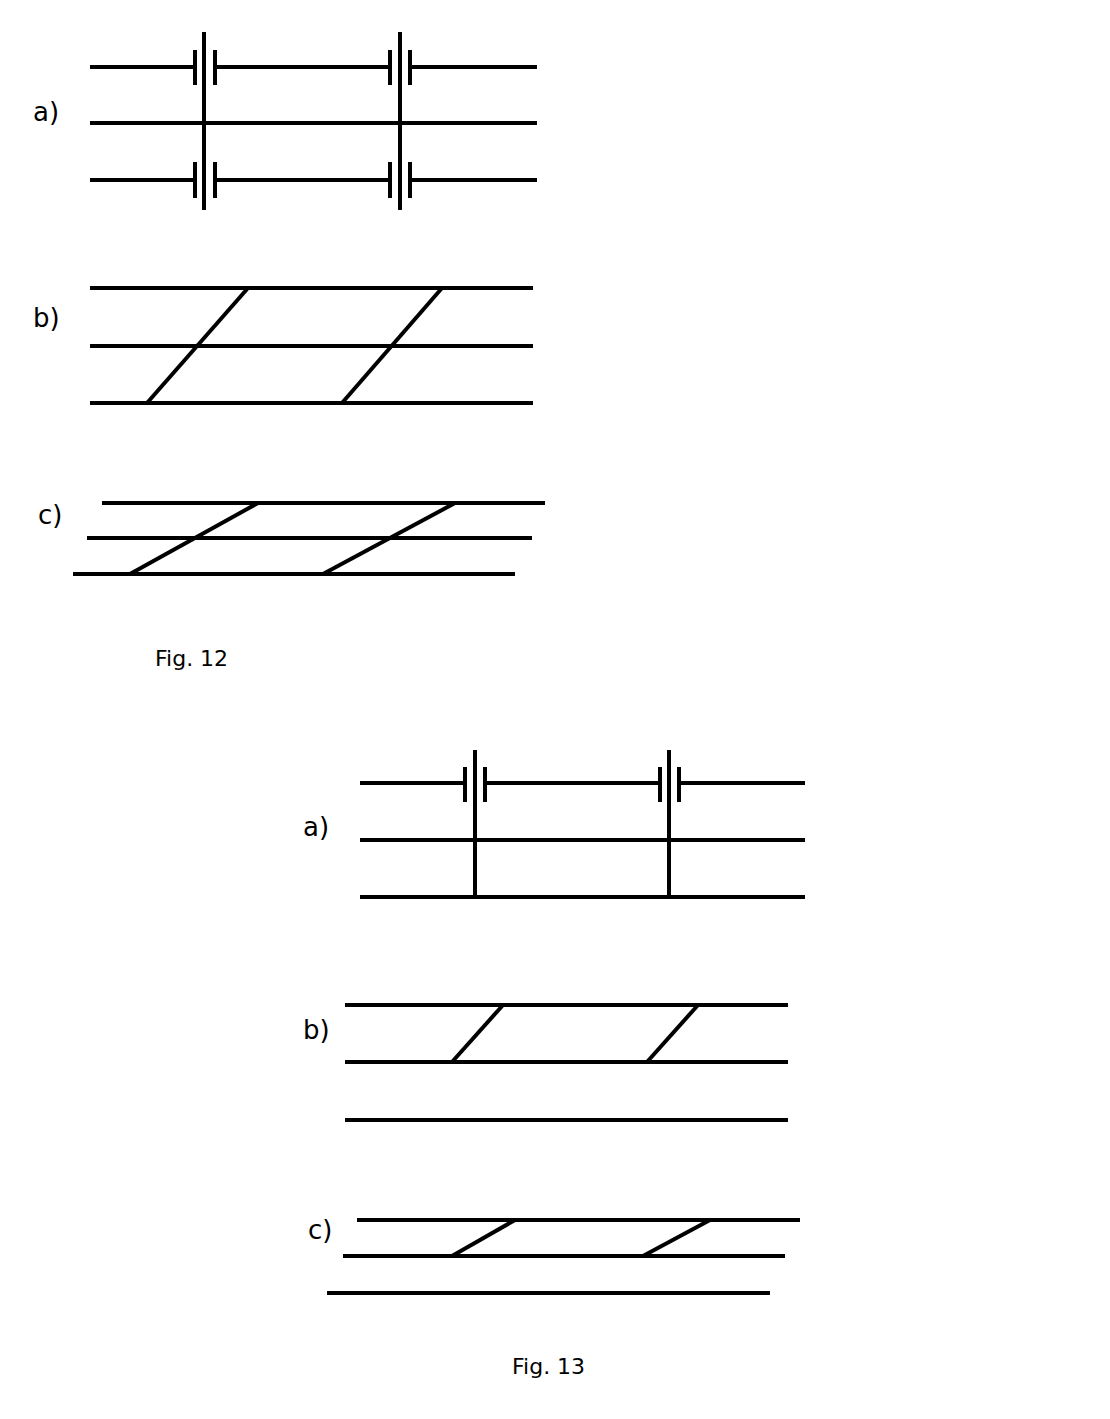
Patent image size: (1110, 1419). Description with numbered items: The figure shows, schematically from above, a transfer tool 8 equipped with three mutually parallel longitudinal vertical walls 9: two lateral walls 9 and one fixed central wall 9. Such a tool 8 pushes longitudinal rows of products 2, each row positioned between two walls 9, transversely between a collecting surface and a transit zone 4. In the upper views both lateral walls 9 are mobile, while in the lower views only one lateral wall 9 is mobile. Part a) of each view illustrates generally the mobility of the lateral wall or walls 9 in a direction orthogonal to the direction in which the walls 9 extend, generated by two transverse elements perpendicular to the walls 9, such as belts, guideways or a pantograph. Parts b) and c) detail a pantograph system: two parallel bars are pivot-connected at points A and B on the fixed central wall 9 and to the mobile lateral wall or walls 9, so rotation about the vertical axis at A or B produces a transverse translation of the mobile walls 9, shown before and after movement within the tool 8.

In FIG. 13, the products 2 is at (652, 717).
In FIG. 13, the transit zone 4 is at (480, 695).
In FIG. 12, the transfer tool 8 is at (575, 132).
In FIG. 13, the transfer tool 8 is at (823, 842).
In FIG. 12, the longitudinal vertical walls 9 is at (283, 180).
In FIG. 13, the longitudinal vertical walls 9 is at (546, 897).